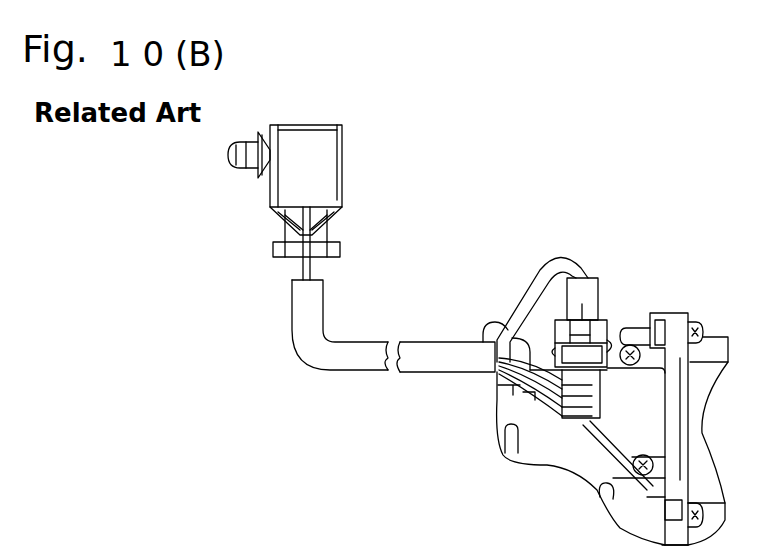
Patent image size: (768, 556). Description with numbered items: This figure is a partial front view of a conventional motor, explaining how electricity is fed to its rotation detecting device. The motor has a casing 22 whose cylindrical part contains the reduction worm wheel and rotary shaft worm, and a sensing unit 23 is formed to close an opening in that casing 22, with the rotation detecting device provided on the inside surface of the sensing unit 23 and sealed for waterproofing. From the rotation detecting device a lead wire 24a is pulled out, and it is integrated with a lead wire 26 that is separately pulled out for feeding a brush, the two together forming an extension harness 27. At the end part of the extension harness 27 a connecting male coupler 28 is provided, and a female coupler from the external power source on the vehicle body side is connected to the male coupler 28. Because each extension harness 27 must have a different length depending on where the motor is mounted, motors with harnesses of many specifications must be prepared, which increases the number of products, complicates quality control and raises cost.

The casing 22 is at (636, 322).
The sensing unit 23 is at (632, 427).
The lead wire 24a is at (500, 397).
The lead wire 26 is at (548, 262).
The extension harness 27 is at (438, 352).
The male coupler 28 is at (318, 172).